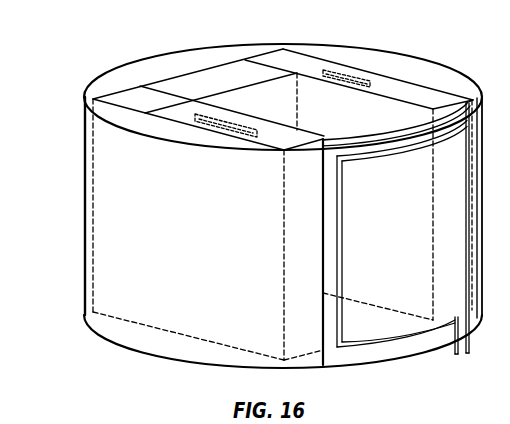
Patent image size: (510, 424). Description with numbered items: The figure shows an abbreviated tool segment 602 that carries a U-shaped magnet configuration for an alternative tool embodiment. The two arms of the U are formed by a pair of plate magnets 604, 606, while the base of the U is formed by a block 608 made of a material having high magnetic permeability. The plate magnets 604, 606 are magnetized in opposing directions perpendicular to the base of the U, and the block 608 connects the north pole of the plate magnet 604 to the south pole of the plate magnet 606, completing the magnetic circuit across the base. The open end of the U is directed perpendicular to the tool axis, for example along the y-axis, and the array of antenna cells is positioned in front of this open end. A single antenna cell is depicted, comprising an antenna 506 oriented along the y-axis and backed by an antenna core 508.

The abbreviated tool segment 602 is at (128, 348).
The plate magnet 604 is at (378, 73).
The plate magnet 606 is at (150, 115).
The block 608 is at (198, 72).
The antenna 506 is at (398, 339).
The antenna core 508 is at (465, 103).